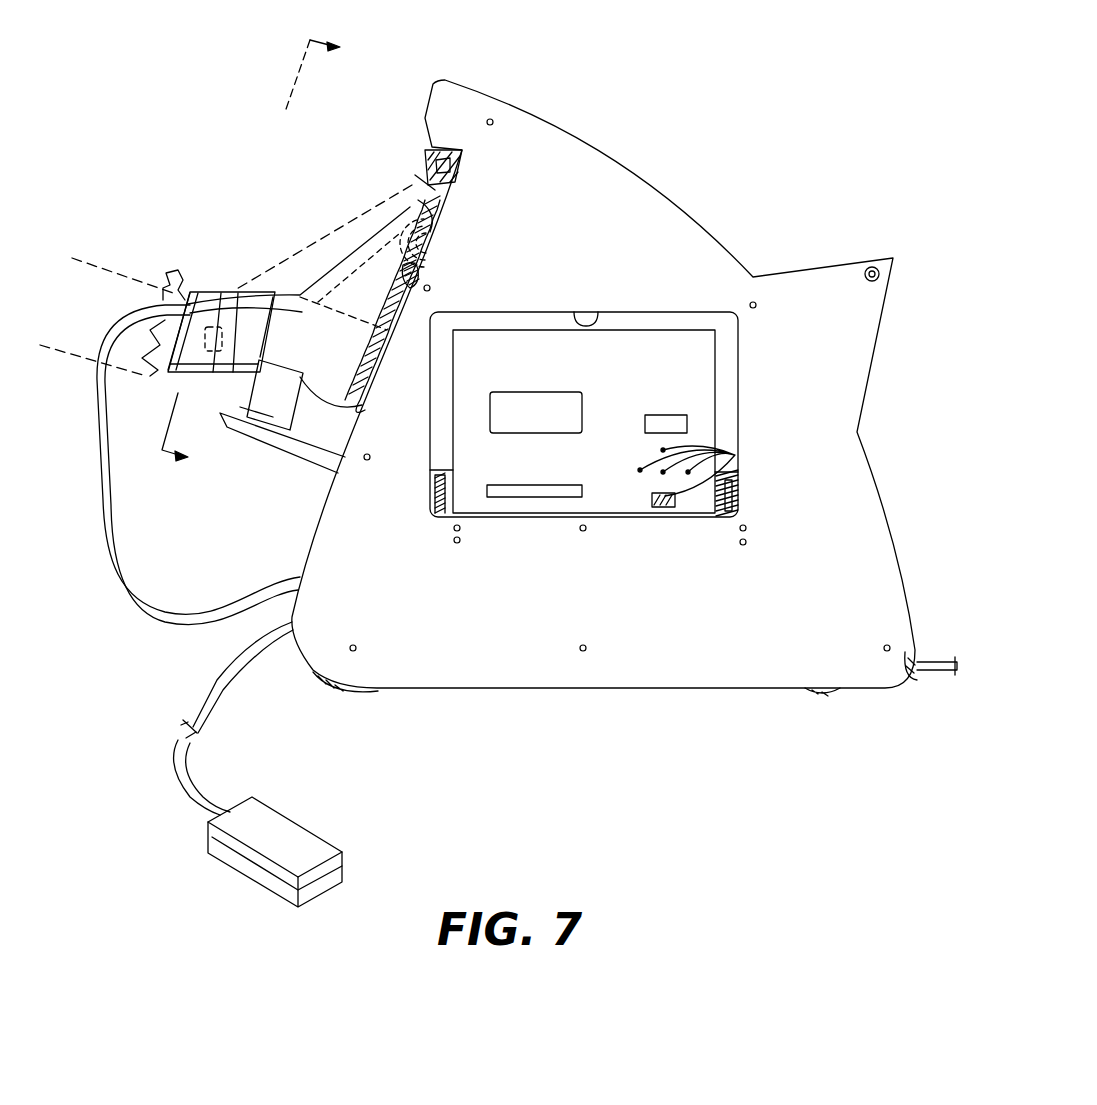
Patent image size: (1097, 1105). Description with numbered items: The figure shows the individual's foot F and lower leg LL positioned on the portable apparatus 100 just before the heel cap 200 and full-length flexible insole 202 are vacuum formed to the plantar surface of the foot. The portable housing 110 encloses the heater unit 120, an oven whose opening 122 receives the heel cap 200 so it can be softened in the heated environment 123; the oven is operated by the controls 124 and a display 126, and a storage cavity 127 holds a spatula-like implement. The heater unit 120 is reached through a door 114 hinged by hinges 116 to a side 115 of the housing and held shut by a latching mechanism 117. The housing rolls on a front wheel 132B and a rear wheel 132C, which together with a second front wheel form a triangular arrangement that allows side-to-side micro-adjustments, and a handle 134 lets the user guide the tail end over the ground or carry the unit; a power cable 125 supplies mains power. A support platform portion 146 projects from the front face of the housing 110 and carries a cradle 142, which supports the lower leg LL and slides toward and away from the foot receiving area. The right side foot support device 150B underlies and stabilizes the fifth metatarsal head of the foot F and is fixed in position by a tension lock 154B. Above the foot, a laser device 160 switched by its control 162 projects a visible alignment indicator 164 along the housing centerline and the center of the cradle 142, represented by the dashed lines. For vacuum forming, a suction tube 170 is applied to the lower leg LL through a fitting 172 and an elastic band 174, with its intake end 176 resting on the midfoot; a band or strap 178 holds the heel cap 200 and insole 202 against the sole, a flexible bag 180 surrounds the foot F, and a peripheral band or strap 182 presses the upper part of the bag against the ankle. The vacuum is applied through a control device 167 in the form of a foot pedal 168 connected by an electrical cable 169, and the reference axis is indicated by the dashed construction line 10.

The latch assembly axis 10 is at (287, 255).
The apparatus 100 is at (784, 103).
The portable housing 110 is at (666, 222).
The door 114 is at (697, 518).
The side 115 is at (627, 657).
The hinges 116 is at (438, 488).
The latching mechanism 117 is at (587, 318).
The heater unit 120 is at (688, 386).
The opening 122 is at (582, 405).
The heated environment 123 is at (528, 413).
The controls 124 is at (735, 455).
The power cable 125 is at (938, 668).
The display 126 is at (688, 423).
The storage cavity 127 is at (543, 490).
The front wheel 132B is at (353, 693).
The rear wheel 132C is at (820, 694).
The handle 134 is at (885, 273).
The cradle 142 is at (270, 392).
The support platform portion 146 is at (310, 452).
The foot support device 150B is at (427, 262).
The tension lock 154B is at (420, 272).
The laser device 160 is at (413, 158).
The control 162 is at (428, 142).
The visible alignment indicator 164 is at (372, 206).
The control device 167 is at (270, 916).
The foot pedal 168 is at (258, 876).
The electrical cable 169 is at (228, 700).
The suction tube 170 is at (122, 570).
The fitting 172 is at (216, 340).
The elastic band 174 is at (243, 325).
The intake end 176 is at (257, 335).
The band or strap 178 is at (335, 292).
The flexible bag 180 is at (313, 295).
The peripheral band or strap 182 is at (198, 290).
The heel cap 200 is at (368, 413).
The full-length flexible insole 202 is at (423, 241).
The lower leg LL is at (86, 278).
The foot F is at (310, 320).